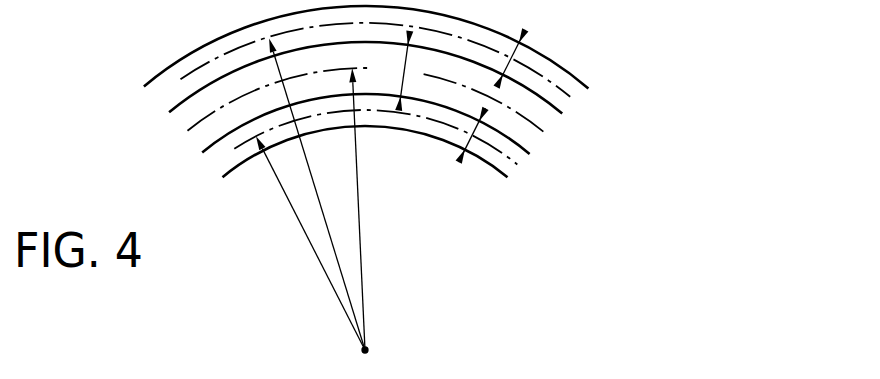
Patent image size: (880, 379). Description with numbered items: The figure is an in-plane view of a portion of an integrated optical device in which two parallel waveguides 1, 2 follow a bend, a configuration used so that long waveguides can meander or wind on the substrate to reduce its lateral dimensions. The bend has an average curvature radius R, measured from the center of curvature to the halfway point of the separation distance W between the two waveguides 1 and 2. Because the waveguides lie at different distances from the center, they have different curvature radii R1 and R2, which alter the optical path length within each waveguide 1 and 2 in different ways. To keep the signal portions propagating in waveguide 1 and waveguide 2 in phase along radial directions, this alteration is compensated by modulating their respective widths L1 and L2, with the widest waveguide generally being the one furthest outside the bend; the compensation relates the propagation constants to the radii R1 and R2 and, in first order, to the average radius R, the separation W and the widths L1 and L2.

The waveguide 1 is at (233, 169).
The waveguide 2 is at (182, 100).
The average curvature radius R is at (366, 209).
The curvature radius R1 is at (310, 243).
The curvature radius R2 is at (317, 194).
The separation distance W is at (393, 71).
The width L1 is at (463, 135).
The width L2 is at (502, 58).